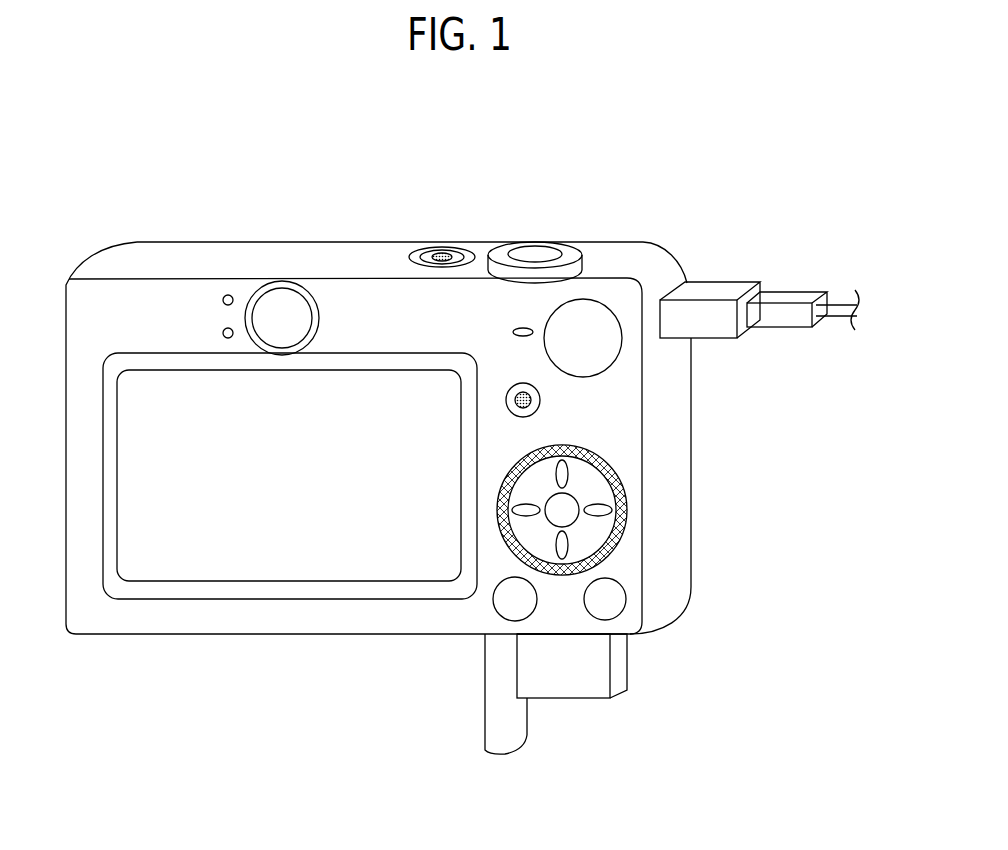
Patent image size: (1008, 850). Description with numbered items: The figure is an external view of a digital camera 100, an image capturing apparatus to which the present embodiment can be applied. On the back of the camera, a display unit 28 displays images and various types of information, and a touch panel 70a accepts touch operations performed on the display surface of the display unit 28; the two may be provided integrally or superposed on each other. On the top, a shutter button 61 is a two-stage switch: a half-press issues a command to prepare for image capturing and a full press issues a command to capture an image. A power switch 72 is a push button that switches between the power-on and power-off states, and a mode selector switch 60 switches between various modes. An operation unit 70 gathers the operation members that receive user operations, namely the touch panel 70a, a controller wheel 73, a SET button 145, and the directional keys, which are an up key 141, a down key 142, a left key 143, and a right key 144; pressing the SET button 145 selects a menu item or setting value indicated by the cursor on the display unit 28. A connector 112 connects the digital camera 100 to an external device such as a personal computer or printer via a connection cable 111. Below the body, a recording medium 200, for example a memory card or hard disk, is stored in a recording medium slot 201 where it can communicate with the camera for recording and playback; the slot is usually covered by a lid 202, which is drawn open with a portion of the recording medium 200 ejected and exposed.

The digital camera 100 is at (655, 158).
The display unit 28 is at (180, 390).
The touch panel 70a is at (302, 553).
The power switch 72 is at (437, 248).
The shutter button 61 is at (531, 250).
The operation unit 70 is at (535, 270).
The mode selector switch 60 is at (610, 353).
The controller wheel 73 is at (532, 448).
The up key 141 is at (555, 477).
The down key 142 is at (556, 545).
The left key 143 is at (514, 508).
The right key 144 is at (612, 512).
The SET button 145 is at (548, 502).
The connector 112 is at (714, 292).
The connection cable 111 is at (790, 300).
The recording medium 200 is at (585, 690).
The recording medium slot 201 is at (537, 635).
The lid 202 is at (533, 736).